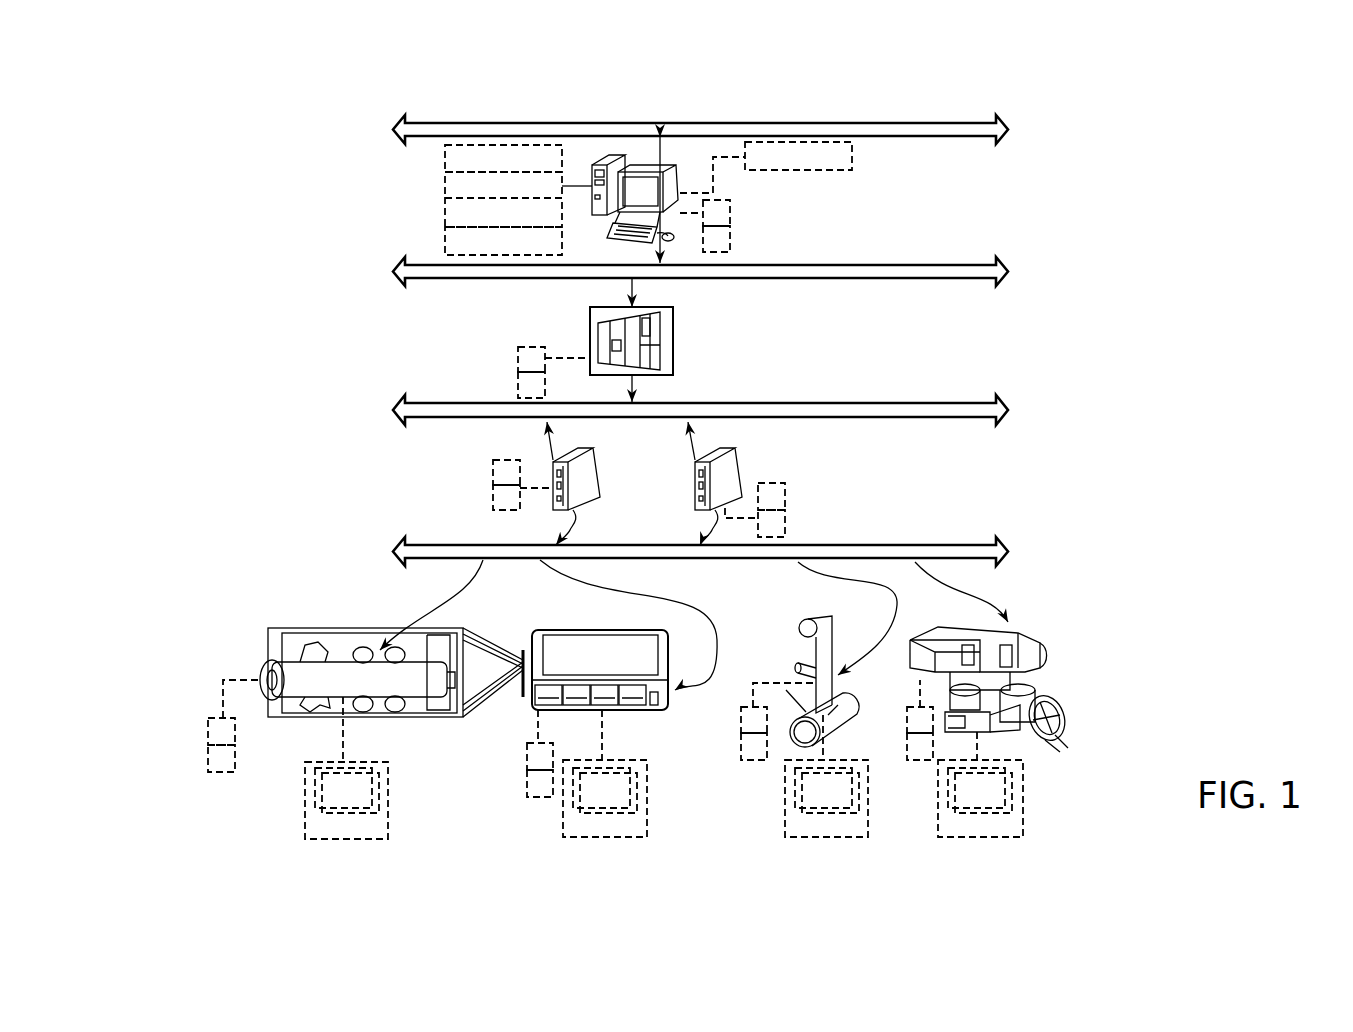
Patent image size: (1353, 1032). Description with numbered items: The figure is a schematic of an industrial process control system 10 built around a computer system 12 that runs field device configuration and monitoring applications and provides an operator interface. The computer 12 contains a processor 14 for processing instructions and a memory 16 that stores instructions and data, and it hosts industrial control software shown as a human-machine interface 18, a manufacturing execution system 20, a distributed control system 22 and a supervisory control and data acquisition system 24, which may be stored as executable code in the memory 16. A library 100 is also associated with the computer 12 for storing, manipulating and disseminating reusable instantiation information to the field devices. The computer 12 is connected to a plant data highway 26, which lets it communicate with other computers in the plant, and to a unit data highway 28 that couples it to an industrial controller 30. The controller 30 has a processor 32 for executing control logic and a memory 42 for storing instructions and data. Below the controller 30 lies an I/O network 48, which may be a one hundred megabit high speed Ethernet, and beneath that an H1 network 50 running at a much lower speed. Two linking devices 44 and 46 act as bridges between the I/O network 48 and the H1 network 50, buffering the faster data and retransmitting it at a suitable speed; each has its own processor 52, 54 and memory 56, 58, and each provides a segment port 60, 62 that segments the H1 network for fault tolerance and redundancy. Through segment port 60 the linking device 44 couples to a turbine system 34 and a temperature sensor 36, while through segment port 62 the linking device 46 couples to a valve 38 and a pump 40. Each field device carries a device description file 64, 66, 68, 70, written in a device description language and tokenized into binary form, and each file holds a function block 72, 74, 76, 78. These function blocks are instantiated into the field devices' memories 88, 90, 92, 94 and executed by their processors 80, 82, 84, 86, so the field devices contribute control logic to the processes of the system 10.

The industrial process control system 10 is at (1230, 126).
The computer system 12 is at (680, 180).
The processor 14 is at (720, 200).
The memory 16 is at (732, 236).
The human-machine interface (HMI) software 18 is at (445, 159).
The manufacturing execution system (MES) 20 is at (445, 187).
The distributed control system (DCS) 22 is at (445, 214).
The supervisor control and data acquisition (SCADA) system 24 is at (445, 242).
The plant data highway 26 is at (1010, 128).
The unit data highway 28 is at (1010, 268).
The industrial controller 30 is at (673, 346).
The processor 32 is at (532, 347).
The turbine system 34 is at (420, 727).
The temperature sensor 36 is at (628, 711).
The valve 38 is at (835, 738).
The pump 40 is at (1068, 738).
The memory 42 is at (518, 385).
The linking device 44 is at (593, 478).
The linking device 46 is at (735, 478).
The I/O network 48 is at (1010, 410).
The H1 network 50 is at (1010, 550).
The processor 52 is at (508, 460).
The processor 54 is at (783, 492).
The memory 56 is at (493, 496).
The memory 58 is at (788, 521).
The segment port 60 is at (548, 510).
The segment port 62 is at (690, 510).
The device description (DD) file 64 is at (368, 780).
The device description (DD) file 66 is at (627, 786).
The device description (DD) file 68 is at (811, 789).
The device description (DD) file 70 is at (1002, 797).
The function block 72 is at (377, 794).
The function block 74 is at (635, 794).
The function block 76 is at (795, 788).
The function block 78 is at (1012, 794).
The processor 80 is at (208, 728).
The processor 82 is at (553, 760).
The processor 84 is at (741, 717).
The processor 86 is at (907, 718).
The memory 88 is at (208, 763).
The memory 90 is at (527, 783).
The memory 92 is at (741, 750).
The memory 94 is at (907, 747).
The library 100 is at (852, 160).